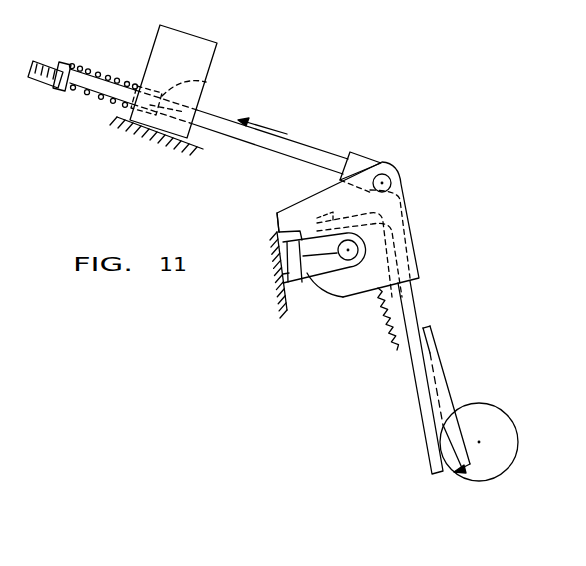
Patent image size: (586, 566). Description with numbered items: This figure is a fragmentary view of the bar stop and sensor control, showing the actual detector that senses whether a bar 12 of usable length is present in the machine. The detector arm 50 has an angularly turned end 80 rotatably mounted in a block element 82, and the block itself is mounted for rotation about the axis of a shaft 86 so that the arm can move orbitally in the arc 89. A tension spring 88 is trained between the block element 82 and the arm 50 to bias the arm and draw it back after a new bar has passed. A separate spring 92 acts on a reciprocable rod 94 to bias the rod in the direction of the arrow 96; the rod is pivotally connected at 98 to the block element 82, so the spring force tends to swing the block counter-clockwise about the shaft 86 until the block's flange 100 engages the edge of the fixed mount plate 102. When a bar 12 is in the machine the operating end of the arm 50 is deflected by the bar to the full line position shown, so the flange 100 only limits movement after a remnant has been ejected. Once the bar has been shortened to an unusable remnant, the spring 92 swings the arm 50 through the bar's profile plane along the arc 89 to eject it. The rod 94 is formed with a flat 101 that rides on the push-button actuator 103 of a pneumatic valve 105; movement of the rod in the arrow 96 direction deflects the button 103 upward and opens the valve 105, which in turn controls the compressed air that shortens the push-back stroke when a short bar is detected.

The bar 12 is at (508, 468).
The detector arm 50 is at (415, 392).
The angularly turned end 80 is at (330, 208).
The block element 82 is at (342, 296).
The shaft 86 is at (282, 273).
The tension spring 88 is at (398, 351).
The arc 89 is at (447, 478).
The spring 92 is at (85, 93).
The reciprocable rod 94 is at (238, 141).
The arrow 96 is at (272, 130).
The pivotal connection 98 is at (390, 178).
The flange 100 is at (277, 217).
The flat 101 is at (154, 140).
The fixed mount plate 102 is at (279, 277).
The push-button actuator 103 is at (204, 82).
The pneumatic valve 105 is at (216, 44).